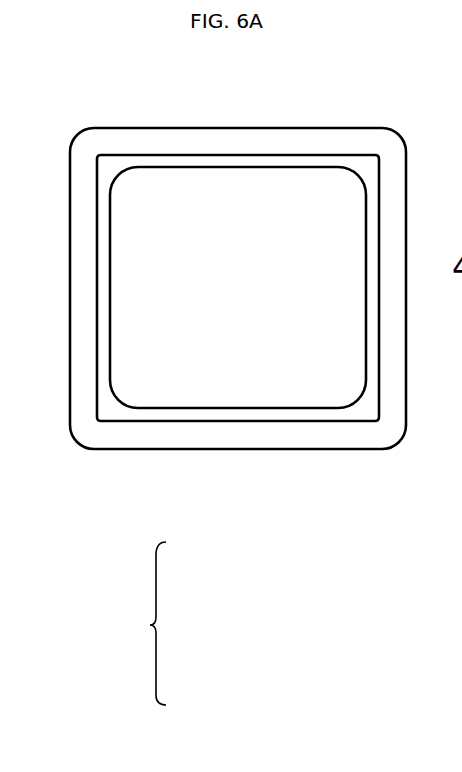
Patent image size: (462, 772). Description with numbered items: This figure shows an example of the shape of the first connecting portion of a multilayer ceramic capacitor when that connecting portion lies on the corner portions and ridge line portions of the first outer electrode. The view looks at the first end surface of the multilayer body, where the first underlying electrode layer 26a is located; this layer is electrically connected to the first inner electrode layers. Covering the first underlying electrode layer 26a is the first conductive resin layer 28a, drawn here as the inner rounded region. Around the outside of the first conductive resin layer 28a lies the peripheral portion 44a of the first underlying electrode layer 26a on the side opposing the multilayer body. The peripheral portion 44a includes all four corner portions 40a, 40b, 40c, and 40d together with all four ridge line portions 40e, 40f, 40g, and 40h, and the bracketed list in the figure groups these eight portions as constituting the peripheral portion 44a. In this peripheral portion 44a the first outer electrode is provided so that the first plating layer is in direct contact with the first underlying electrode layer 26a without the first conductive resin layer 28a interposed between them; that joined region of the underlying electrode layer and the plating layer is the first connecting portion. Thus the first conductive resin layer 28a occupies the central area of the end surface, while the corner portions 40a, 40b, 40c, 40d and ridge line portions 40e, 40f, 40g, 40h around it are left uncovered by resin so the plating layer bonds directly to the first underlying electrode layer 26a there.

The first underlying electrode layer 26a is at (165, 202).
The first conductive resin layer 28a is at (293, 212).
The corner portion 40a is at (103, 155).
The corner portion 40b is at (370, 157).
The corner portion 40c is at (372, 412).
The corner portion 40d is at (105, 412).
The ridge line portion 40e is at (240, 155).
The ridge line portion 40f is at (379, 287).
The ridge line portion 40g is at (240, 420).
The ridge line portion 40h is at (97, 288).
The peripheral portion 44a is at (186, 623).